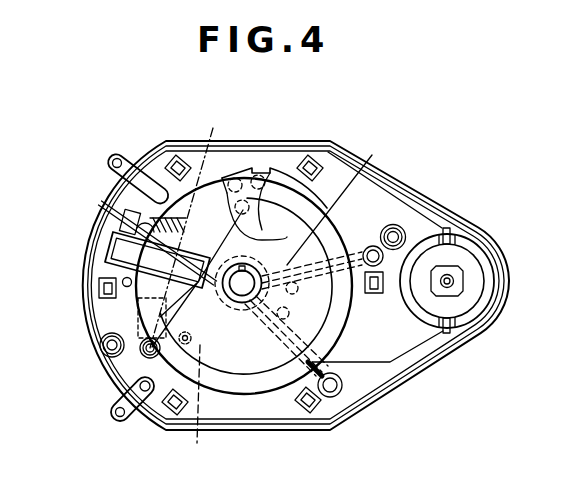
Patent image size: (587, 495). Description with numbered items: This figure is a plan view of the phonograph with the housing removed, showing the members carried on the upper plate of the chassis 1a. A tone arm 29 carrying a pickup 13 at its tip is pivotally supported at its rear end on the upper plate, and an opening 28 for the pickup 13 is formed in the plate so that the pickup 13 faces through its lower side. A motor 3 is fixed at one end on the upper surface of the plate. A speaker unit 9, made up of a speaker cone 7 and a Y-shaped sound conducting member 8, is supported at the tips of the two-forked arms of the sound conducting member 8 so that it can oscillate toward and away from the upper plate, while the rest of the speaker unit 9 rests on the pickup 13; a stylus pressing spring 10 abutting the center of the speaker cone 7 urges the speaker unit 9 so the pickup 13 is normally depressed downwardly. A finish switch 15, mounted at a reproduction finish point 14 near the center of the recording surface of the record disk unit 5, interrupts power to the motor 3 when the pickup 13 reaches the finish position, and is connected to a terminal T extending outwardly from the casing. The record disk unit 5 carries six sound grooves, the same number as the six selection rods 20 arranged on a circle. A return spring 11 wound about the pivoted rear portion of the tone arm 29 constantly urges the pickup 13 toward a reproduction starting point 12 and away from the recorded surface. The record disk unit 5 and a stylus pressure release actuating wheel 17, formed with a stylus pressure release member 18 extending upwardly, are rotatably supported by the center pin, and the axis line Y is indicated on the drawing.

The chassis 1a is at (508, 276).
The motor 3 is at (452, 262).
The record disk unit 5 is at (166, 193).
The speaker cone 7 is at (288, 237).
The Y-shaped sound conducting member 8 is at (120, 248).
The speaker unit 9 is at (241, 392).
The stylus pressing spring 10 is at (247, 305).
The return spring 11 is at (274, 358).
The reproduction starting point 12 is at (147, 215).
The pickup 13 is at (143, 226).
The reproduction finish point 14 is at (271, 175).
The finish switch 15 is at (232, 180).
The stylus pressure release actuating wheel 17 is at (102, 252).
The stylus pressure release member 18 is at (118, 236).
The selection rods 20 is at (178, 160).
The opening 28 is at (230, 292).
The tone arm 29 is at (196, 339).
The terminal T is at (117, 158).
The axis line Y is at (335, 198).